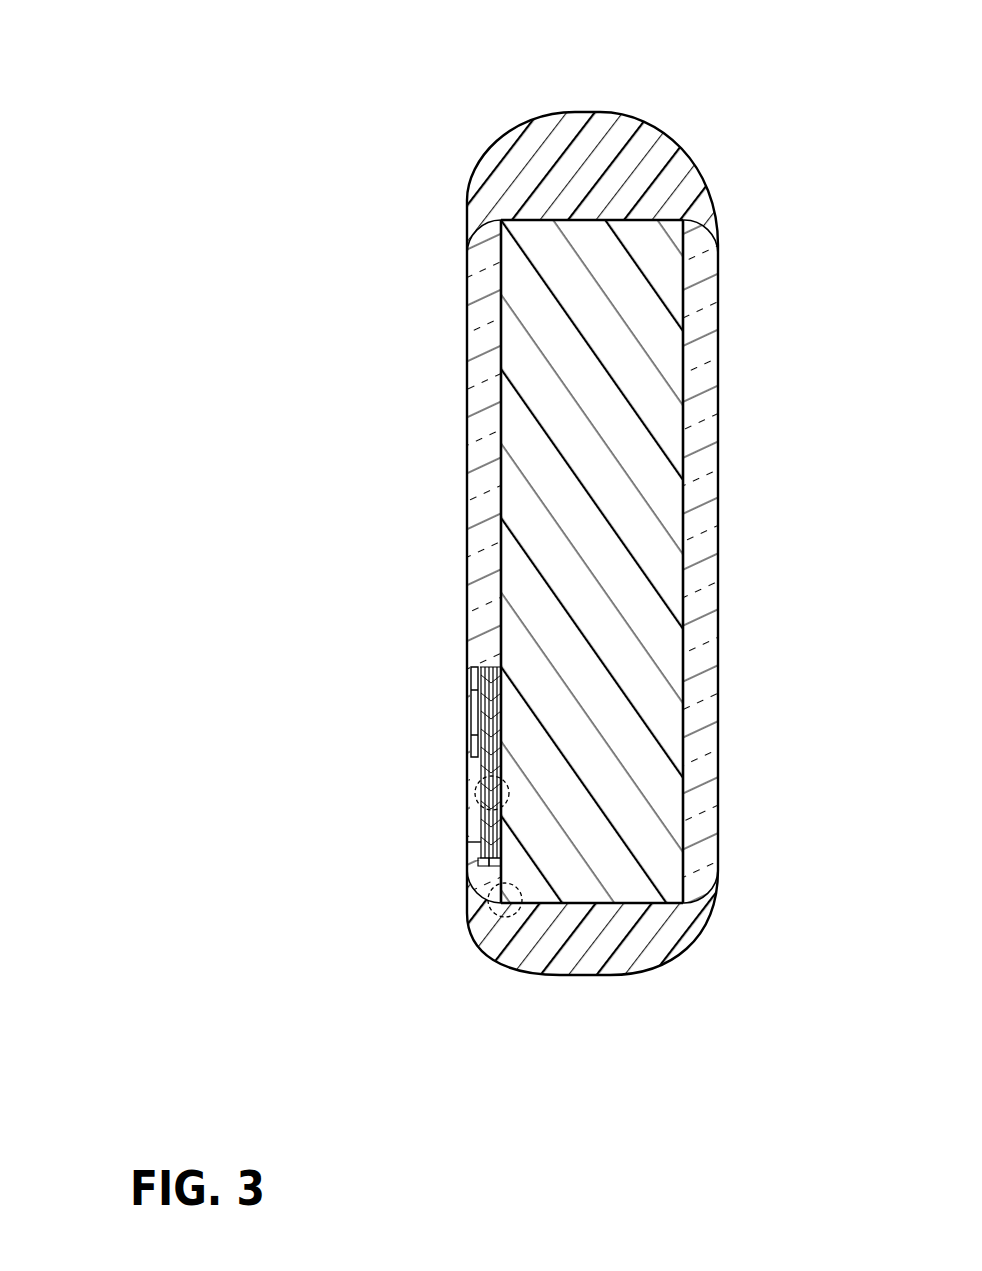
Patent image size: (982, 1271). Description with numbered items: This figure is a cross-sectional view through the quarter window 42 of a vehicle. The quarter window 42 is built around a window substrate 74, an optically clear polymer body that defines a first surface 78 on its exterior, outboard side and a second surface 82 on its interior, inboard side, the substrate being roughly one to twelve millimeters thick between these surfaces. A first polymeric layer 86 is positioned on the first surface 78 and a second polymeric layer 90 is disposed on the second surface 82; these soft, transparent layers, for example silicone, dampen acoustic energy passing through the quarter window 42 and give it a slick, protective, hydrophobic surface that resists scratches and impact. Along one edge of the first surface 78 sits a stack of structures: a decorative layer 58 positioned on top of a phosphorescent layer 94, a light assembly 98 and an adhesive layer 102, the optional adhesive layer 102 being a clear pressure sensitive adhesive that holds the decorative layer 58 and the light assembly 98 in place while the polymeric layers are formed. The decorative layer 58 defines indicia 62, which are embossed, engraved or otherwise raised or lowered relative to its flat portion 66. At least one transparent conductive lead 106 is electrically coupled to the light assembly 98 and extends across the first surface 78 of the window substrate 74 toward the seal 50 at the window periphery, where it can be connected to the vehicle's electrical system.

The quarter window 42 is at (687, 107).
The seal 50 is at (592, 162).
The decorative layer 58 is at (478, 705).
The indicia 62 is at (376, 818).
The flat portion 66 is at (488, 768).
The window substrate 74 is at (618, 447).
The first surface 78 is at (503, 397).
The second surface 82 is at (685, 587).
The first polymeric layer 86 is at (488, 310).
The second polymeric layer 90 is at (702, 367).
The phosphorescent layer 94 is at (466, 842).
The light assembly 98 is at (483, 866).
The adhesive layer 102 is at (495, 866).
The conductive lead 106 is at (490, 912).